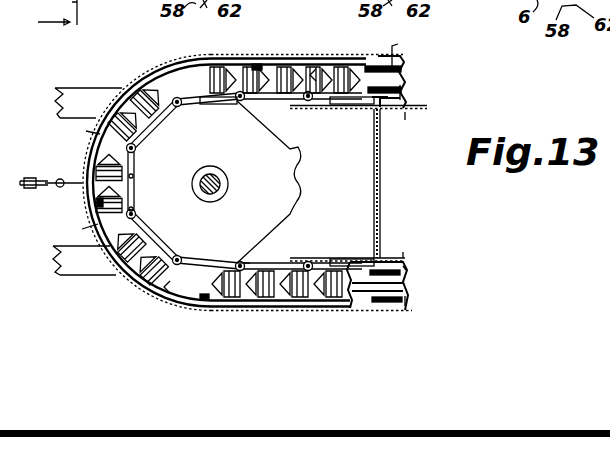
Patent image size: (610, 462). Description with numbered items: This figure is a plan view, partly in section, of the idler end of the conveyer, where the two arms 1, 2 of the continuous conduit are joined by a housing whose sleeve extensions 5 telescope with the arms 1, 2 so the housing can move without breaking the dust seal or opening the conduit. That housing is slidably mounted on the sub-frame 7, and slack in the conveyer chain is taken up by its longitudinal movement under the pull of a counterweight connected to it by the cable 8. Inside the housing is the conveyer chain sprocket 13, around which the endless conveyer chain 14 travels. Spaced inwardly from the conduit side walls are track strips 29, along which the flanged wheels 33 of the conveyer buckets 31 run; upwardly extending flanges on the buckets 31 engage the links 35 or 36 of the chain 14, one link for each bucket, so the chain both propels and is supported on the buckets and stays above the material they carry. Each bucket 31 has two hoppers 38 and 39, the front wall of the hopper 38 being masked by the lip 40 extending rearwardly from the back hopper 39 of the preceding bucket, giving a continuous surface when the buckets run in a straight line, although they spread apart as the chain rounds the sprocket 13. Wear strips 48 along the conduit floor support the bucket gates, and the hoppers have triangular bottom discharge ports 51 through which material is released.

The arm of continuous conduit 1 is at (402, 68).
The arm of continuous conduit 2 is at (406, 283).
The sleeve extension 5 is at (412, 241).
The sub-frame 7 is at (55, 103).
The cable 8 is at (38, 179).
The conveyer chain sprocket 13 is at (267, 159).
The endless conveyer chain 14 is at (262, 263).
The track strip 29 is at (371, 54).
The conveyer bucket 31 is at (158, 74).
The flanged wheel 33 is at (127, 88).
The chain link 35 is at (217, 105).
The chain link 36 is at (160, 118).
The bucket hopper 38 is at (256, 64).
The bucket hopper 39 is at (320, 69).
The lip 40 is at (81, 178).
The wear strip 48 is at (419, 300).
The discharge port 51 is at (135, 175).